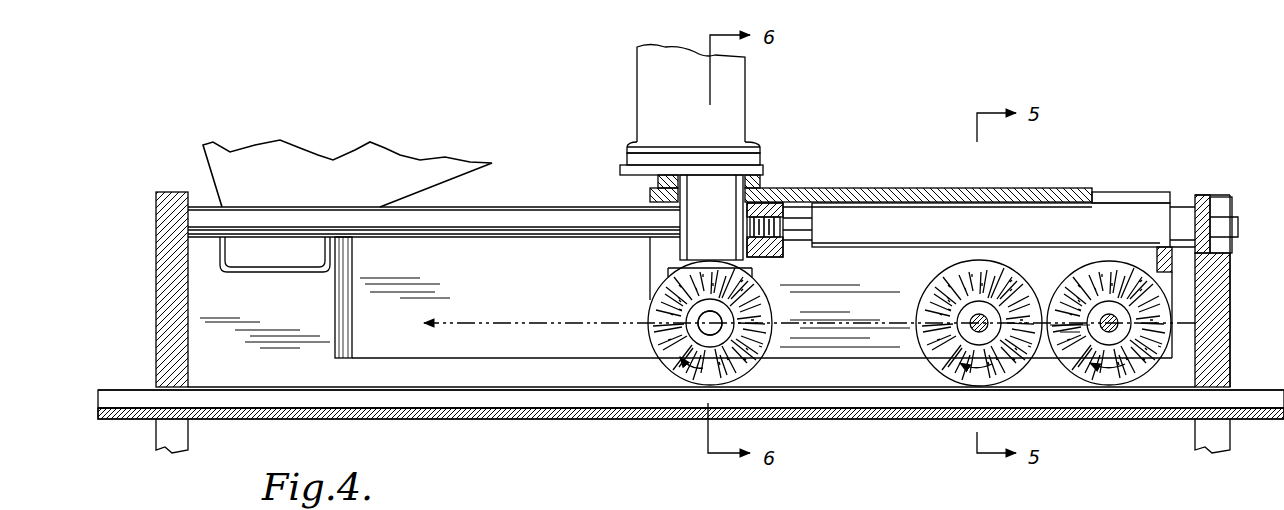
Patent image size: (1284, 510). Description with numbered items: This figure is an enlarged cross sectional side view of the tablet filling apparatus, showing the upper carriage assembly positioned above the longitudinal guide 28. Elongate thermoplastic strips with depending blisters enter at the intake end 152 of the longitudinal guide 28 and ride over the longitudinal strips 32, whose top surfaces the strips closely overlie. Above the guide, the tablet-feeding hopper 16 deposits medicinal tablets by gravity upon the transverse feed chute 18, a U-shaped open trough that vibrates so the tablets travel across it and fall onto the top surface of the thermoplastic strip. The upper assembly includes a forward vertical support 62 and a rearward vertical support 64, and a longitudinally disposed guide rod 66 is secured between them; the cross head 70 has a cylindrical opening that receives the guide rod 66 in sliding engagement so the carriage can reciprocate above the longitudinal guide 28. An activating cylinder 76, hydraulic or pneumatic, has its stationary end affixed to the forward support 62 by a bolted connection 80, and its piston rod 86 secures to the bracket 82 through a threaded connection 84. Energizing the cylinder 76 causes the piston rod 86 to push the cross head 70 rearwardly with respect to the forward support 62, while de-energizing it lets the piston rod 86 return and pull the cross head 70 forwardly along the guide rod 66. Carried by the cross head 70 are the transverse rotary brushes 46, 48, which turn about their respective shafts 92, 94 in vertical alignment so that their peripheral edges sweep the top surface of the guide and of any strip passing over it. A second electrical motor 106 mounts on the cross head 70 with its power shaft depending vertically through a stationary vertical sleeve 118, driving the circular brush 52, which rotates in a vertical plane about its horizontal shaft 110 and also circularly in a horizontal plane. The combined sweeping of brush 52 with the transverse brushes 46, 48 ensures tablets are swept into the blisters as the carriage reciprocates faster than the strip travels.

The tablet-feeding hopper 16 is at (403, 162).
The transverse feed chute 18 is at (238, 274).
The longitudinal guide 28 is at (292, 411).
The longitudinal strips 32 is at (245, 402).
The transverse rotary brush 46 is at (1137, 372).
The transverse rotary brush 48 is at (927, 313).
The circular brush 52 is at (672, 360).
The forward vertical support 62 is at (1228, 350).
The rearward vertical support 64 is at (160, 241).
The guide rod 66 is at (505, 215).
The cross head 70 is at (852, 188).
The activating cylinder 76 is at (878, 215).
The bolted connection 80 is at (1226, 215).
The bracket 82 is at (762, 250).
The threaded connection 84 is at (770, 217).
The piston rod 86 is at (812, 228).
The brush shaft 92 is at (1107, 320).
The brush shaft 94 is at (977, 320).
The second electrical motor 106 is at (738, 108).
The horizontal shaft 110 is at (706, 320).
The vertical sleeve 118 is at (697, 237).
The intake end 152 is at (98, 404).